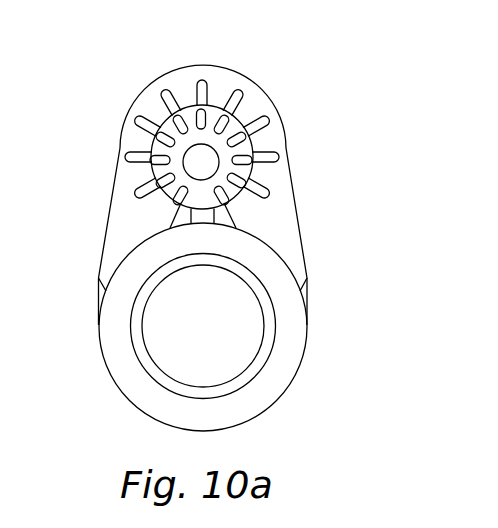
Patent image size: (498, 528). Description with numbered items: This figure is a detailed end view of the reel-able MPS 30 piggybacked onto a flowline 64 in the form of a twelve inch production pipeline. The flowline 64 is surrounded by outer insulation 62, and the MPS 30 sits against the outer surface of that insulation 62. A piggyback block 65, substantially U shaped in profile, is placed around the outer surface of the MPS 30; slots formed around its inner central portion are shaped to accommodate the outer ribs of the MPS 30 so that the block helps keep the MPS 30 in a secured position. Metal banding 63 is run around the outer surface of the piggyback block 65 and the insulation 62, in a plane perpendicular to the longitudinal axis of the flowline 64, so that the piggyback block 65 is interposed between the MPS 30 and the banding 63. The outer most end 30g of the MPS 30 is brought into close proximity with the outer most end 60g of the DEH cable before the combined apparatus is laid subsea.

The reel-able MPS 30 is at (158, 122).
The outer most end of the MPS 30g is at (172, 163).
The outer most end of the DEH cable 60g is at (191, 161).
The piggyback block 65 is at (283, 207).
The metal banding 63 is at (308, 293).
The outer insulation 62 is at (288, 347).
The flowline 64 is at (250, 372).